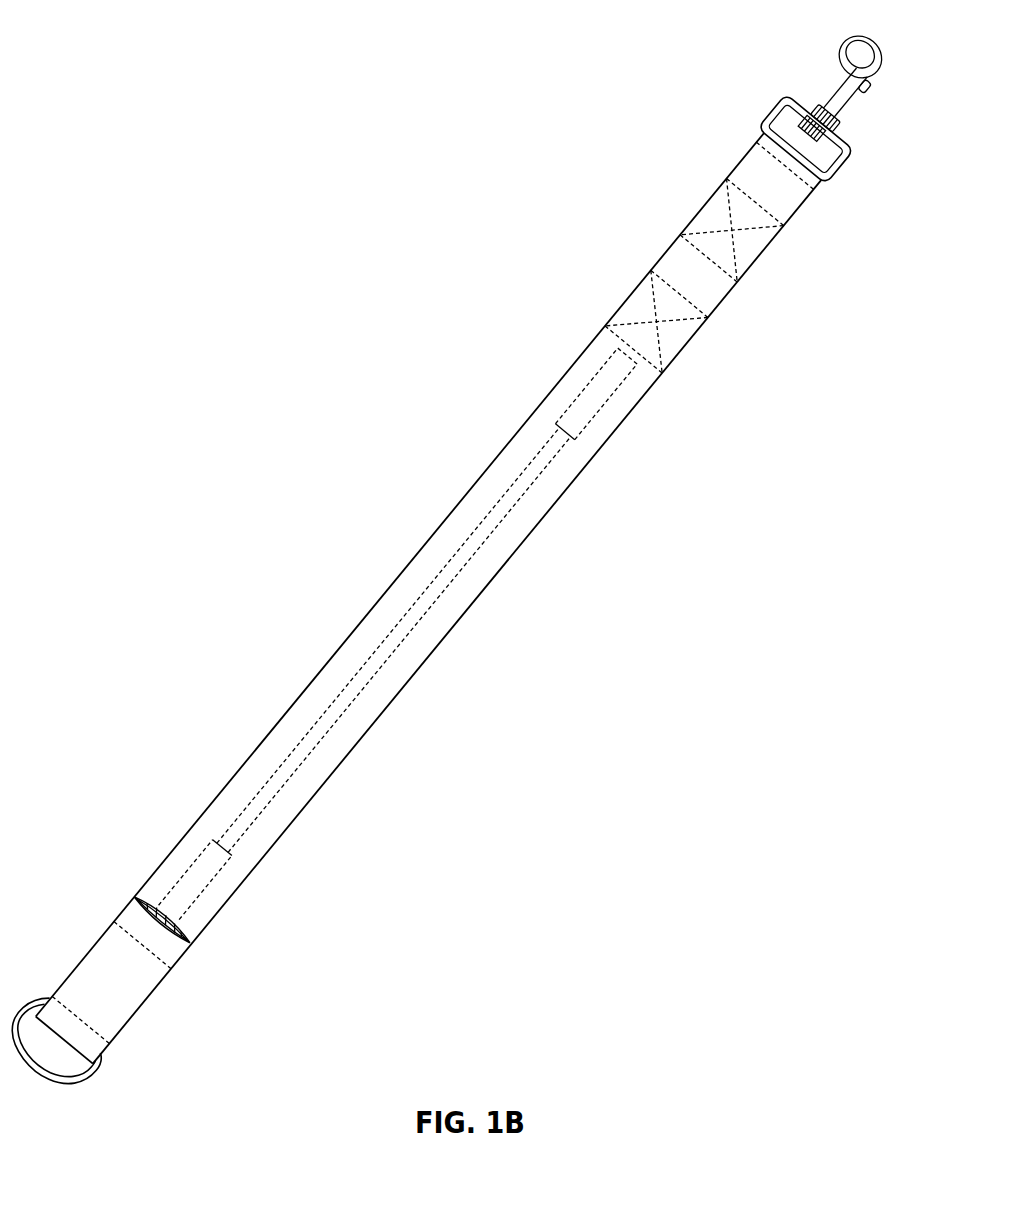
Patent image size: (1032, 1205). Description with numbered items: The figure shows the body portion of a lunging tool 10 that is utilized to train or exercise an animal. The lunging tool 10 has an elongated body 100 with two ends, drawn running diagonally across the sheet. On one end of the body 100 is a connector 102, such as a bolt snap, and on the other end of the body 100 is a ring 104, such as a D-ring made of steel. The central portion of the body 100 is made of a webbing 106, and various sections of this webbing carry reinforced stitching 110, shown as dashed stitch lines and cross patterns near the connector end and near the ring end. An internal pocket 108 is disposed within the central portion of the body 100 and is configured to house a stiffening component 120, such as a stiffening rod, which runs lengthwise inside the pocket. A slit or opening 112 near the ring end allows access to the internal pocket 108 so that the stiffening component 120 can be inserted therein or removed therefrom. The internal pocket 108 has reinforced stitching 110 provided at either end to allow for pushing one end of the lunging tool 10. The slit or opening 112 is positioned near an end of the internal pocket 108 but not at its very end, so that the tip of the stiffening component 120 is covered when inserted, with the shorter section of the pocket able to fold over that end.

The lunging tool 10 is at (146, 128).
The body 100 is at (543, 397).
The connector 102 is at (851, 116).
The ring 104 is at (112, 1057).
The webbing 106 is at (398, 713).
The internal pocket 108 is at (523, 500).
The reinforced stitching 110 is at (690, 317).
The slit or opening 112 is at (180, 921).
The stiffening component 120 is at (383, 640).